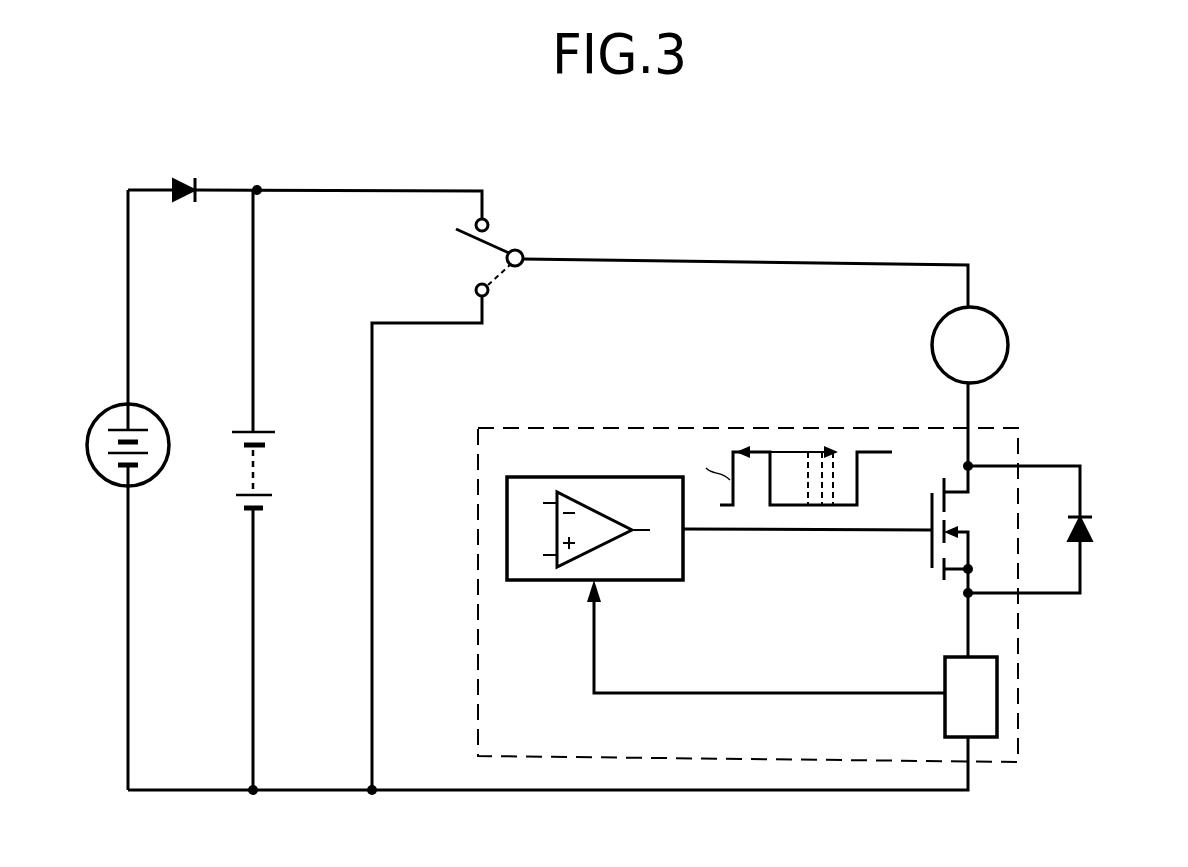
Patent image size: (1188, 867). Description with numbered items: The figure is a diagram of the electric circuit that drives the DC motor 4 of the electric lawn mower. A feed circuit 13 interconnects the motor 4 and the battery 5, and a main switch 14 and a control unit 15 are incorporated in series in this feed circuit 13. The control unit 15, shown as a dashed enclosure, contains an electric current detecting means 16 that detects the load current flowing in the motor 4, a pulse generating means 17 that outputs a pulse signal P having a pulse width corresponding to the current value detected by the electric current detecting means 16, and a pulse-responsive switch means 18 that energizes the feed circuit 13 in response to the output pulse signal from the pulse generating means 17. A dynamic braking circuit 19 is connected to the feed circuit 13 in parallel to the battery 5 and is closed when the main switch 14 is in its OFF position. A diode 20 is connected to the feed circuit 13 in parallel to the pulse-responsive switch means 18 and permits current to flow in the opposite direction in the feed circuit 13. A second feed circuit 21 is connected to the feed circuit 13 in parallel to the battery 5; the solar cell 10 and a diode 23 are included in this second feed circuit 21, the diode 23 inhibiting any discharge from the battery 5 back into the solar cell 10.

The motor 4 is at (1005, 330).
The battery 5 is at (273, 432).
The solar cell 10 is at (145, 485).
The feed circuit 13 is at (829, 265).
The main switch 14 is at (500, 246).
The control unit 15 is at (634, 418).
The electric current detecting means 16 is at (945, 719).
The pulse generating means 17 is at (581, 485).
The pulse-responsive switch means 18 is at (936, 470).
The dynamic braking circuit 19 is at (372, 553).
The diode 20 is at (1092, 515).
The second feed circuit 21 is at (128, 645).
The diode 23 is at (195, 198).